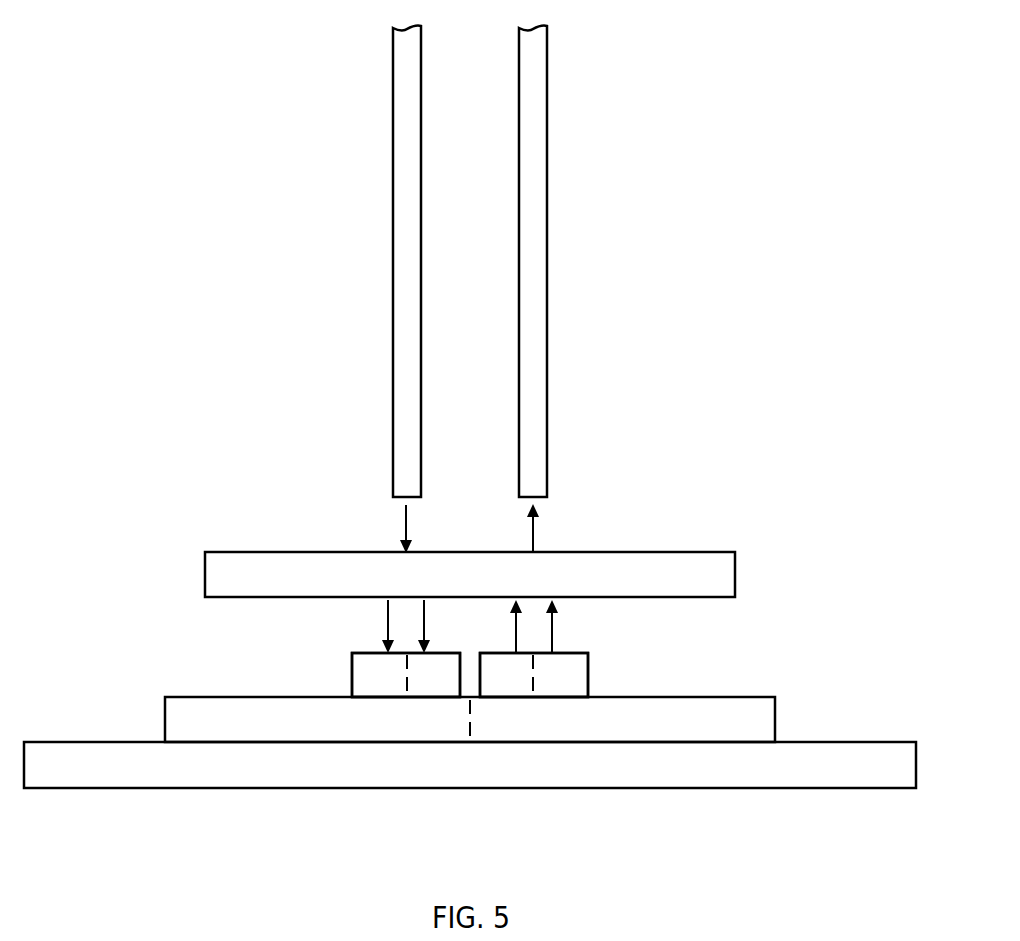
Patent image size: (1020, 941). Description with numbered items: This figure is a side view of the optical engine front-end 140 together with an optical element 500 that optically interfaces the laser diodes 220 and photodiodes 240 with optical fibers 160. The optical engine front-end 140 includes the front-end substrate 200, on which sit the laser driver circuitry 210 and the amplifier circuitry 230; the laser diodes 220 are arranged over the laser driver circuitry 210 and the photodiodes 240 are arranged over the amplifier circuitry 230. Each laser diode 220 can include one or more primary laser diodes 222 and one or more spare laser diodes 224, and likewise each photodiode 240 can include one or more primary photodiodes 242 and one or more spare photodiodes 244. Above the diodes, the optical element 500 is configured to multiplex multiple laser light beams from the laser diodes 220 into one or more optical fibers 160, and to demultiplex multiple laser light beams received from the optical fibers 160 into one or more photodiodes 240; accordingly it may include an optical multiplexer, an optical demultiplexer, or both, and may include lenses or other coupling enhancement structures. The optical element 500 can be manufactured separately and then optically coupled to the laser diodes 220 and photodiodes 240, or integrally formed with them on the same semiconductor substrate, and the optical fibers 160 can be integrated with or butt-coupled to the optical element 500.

The optical engine front-end 140 is at (717, 358).
The optical fibers 160 is at (393, 170).
The optical element 500 is at (470, 574).
The photodiodes 240 is at (327, 661).
The spare photodiodes 244 is at (379, 675).
The primary photodiodes 242 is at (433, 675).
The laser diodes 220 is at (628, 637).
The primary laser diodes 222 is at (506, 675).
The spare laser diodes 224 is at (560, 675).
The amplifier circuitry 230 is at (317, 719).
The laser driver circuitry 210 is at (622, 719).
The front-end substrate 200 is at (470, 765).